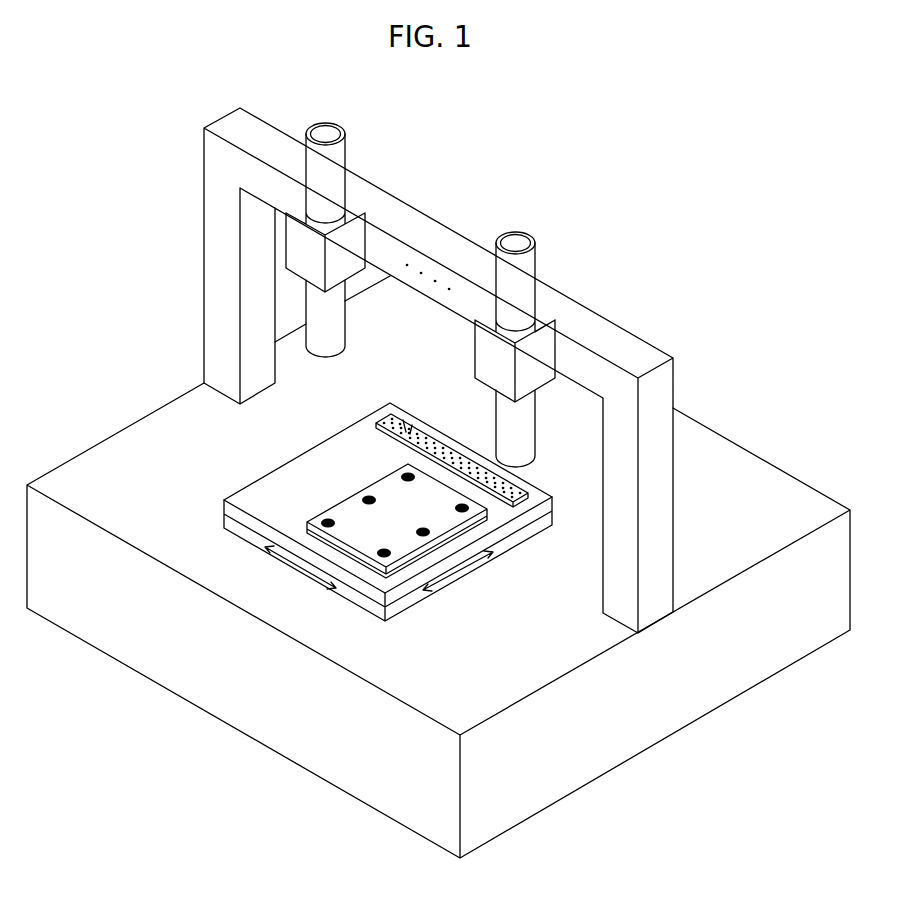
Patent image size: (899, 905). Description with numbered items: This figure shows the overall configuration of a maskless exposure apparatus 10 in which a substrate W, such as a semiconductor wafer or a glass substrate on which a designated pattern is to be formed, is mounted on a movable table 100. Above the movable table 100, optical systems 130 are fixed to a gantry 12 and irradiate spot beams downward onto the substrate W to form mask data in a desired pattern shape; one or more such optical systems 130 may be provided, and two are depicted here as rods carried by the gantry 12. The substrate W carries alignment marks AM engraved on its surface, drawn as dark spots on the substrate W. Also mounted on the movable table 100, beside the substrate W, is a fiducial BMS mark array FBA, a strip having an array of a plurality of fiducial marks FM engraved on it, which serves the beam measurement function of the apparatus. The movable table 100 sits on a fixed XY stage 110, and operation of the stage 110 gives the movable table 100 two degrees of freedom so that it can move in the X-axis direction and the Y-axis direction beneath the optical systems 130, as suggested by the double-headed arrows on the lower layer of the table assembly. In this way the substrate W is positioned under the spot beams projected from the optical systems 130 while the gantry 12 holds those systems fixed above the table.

The substrate processing apparatus 10 is at (729, 244).
The gantry 12 is at (212, 146).
The optical system 130 is at (340, 163).
The movable table 100 is at (265, 502).
The stage 110 is at (224, 527).
The substrate W is at (338, 508).
The alignment mark AM is at (480, 510).
The fiducial mark FM is at (412, 425).
The fiducial BMS mark array FBA is at (526, 487).